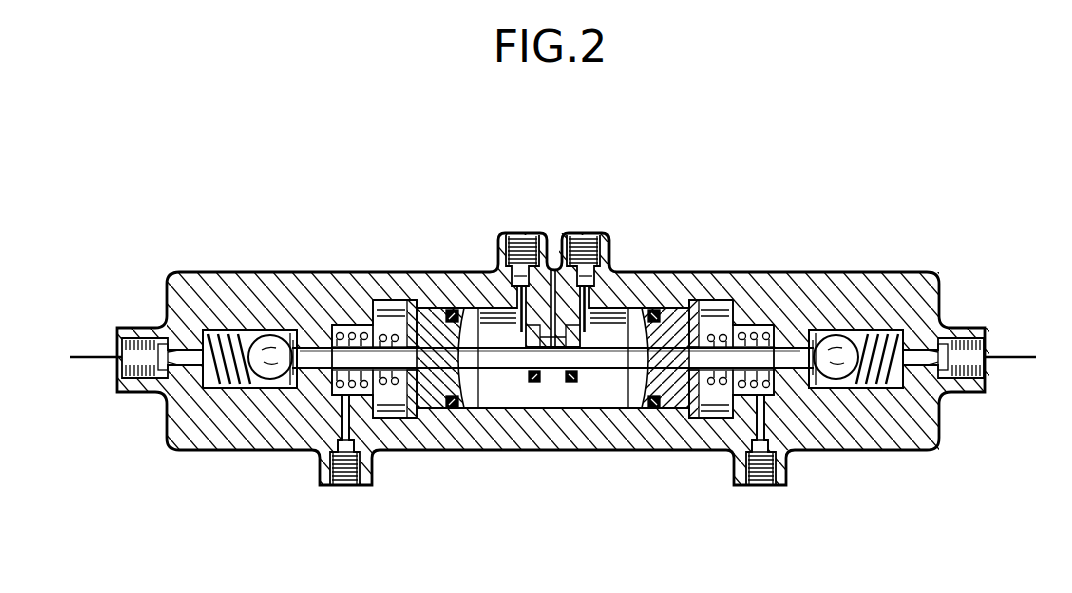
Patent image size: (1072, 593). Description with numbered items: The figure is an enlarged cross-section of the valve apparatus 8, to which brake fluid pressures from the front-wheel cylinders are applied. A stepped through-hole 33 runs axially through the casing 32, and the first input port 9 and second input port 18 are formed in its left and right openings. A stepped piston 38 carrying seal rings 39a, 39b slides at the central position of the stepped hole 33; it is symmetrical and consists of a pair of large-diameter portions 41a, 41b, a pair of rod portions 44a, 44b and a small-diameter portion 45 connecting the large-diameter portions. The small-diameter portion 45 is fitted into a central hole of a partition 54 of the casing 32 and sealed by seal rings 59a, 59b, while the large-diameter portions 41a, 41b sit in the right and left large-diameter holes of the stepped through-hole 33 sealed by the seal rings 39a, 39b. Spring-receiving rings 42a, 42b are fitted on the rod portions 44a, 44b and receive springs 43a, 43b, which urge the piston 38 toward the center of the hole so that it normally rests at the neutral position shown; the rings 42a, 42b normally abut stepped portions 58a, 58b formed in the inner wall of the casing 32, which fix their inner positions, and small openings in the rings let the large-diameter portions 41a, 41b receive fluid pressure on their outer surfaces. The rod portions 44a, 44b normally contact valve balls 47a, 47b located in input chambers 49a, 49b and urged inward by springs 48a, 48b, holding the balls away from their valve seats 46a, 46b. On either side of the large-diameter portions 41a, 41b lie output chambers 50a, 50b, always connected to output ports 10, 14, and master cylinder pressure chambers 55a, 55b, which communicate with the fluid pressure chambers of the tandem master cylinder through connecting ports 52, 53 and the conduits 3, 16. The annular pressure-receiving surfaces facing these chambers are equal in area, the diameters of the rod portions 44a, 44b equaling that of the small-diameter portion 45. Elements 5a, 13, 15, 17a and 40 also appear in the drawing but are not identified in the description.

The conduit 3 is at (522, 268).
The push rod 5a is at (83, 356).
The valve apparatus 8 is at (776, 264).
The first input port 9 is at (122, 362).
The output port 10 is at (346, 484).
The port stem 13 is at (347, 486).
The output port 14 is at (760, 486).
The port stem 15 is at (759, 486).
The conduit 16 is at (584, 234).
The push rod 17a is at (1013, 350).
The second input port 18 is at (990, 354).
The casing 32 is at (323, 290).
The stepped through-hole 33 is at (526, 370).
The stepped piston 38 is at (639, 382).
The seal ring 39a is at (506, 300).
The seal ring 39b is at (650, 300).
The passage 40 is at (551, 270).
The large-diameter portion 41a is at (449, 408).
The large-diameter portion 41b is at (658, 408).
The spring-receiving ring 42a is at (393, 312).
The spring-receiving ring 42b is at (712, 312).
The spring 43a is at (358, 324).
The spring 43b is at (750, 324).
The rod portion 44a is at (428, 400).
The rod portion 44b is at (680, 400).
The small-diameter portion 45 is at (553, 383).
The valve seat 46a is at (284, 389).
The valve seat 46b is at (826, 389).
The valve ball 47a is at (272, 336).
The valve ball 47b is at (836, 336).
The spring 48a is at (216, 330).
The spring 48b is at (882, 326).
The input chamber 49a is at (230, 389).
The input chamber 49b is at (864, 389).
The output chamber 50a is at (378, 300).
The output chamber 50b is at (740, 300).
The connecting port 52 is at (514, 235).
The connecting port 53 is at (590, 245).
The partition 54 is at (522, 408).
The master cylinder pressure chamber 55a is at (480, 400).
The master cylinder pressure chamber 55b is at (588, 400).
The stepped portion 58a is at (452, 308).
The stepped portion 58b is at (656, 308).
The seal ring 59a is at (537, 383).
The seal ring 59b is at (573, 383).